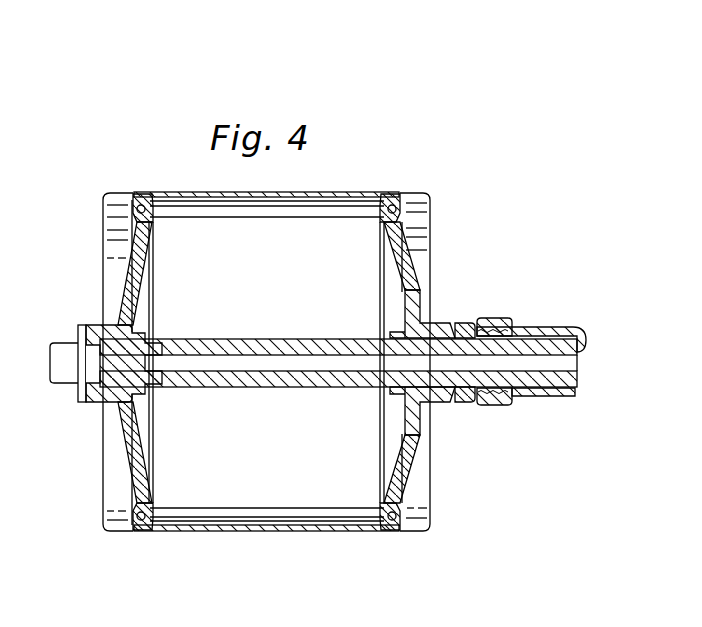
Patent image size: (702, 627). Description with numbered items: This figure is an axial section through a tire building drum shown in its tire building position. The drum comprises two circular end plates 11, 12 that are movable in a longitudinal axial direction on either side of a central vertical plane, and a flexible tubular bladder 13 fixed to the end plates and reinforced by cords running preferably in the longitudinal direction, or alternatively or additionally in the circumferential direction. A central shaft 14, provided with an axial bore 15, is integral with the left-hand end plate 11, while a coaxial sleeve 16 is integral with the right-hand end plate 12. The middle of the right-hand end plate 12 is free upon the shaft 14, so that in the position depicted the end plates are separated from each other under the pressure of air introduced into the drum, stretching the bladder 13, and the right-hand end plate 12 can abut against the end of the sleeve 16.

The left-hand end plate 11 is at (125, 258).
The right-hand end plate 12 is at (408, 277).
The flexible bladder 13 is at (340, 193).
The central shaft 14 is at (473, 376).
The axial bore 15 is at (552, 360).
The coaxial sleeve 16 is at (545, 327).